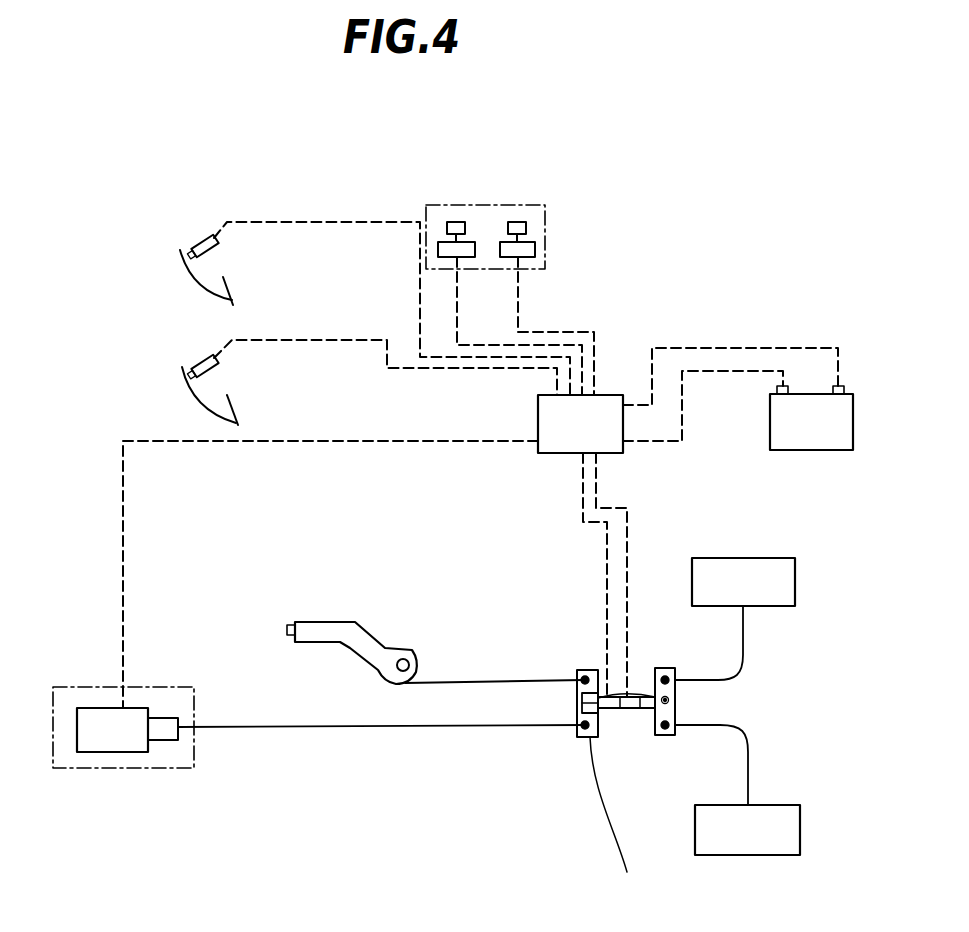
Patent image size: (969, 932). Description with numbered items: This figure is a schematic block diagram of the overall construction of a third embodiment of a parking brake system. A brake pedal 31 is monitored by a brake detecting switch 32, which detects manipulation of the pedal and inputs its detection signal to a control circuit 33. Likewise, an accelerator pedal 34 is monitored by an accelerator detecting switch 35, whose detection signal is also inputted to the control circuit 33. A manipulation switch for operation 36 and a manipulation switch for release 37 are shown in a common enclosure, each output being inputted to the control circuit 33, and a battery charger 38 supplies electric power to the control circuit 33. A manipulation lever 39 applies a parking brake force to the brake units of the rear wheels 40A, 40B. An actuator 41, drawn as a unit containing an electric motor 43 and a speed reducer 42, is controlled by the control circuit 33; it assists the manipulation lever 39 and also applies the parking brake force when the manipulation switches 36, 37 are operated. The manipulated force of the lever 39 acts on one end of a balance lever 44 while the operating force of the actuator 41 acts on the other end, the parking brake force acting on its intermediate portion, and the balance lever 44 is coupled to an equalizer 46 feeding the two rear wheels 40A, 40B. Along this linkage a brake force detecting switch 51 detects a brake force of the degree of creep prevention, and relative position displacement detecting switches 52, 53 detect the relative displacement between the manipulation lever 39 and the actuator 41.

The brake pedal 31 is at (215, 411).
The brake detecting switch 32 is at (210, 358).
The control circuit 33 is at (612, 443).
The accelerator pedal 34 is at (230, 297).
The accelerator detecting switch 35 is at (210, 235).
The manipulation switch for operation 36 is at (525, 250).
The manipulation switch for release 37 is at (470, 250).
The battery charger 38 is at (847, 420).
The manipulation lever 39 is at (315, 625).
The rear wheel 40A is at (795, 576).
The rear wheel 40B is at (800, 830).
The actuator 41 is at (65, 768).
The speed reducer 42 is at (173, 742).
The electric motor 43 is at (95, 715).
The balance lever 44 is at (614, 820).
The equalizer 46 is at (655, 737).
The brake force detecting switch 51 is at (676, 694).
The relative position displacement detecting switch 52 is at (580, 712).
The relative position displacement detecting switch 53 is at (577, 700).